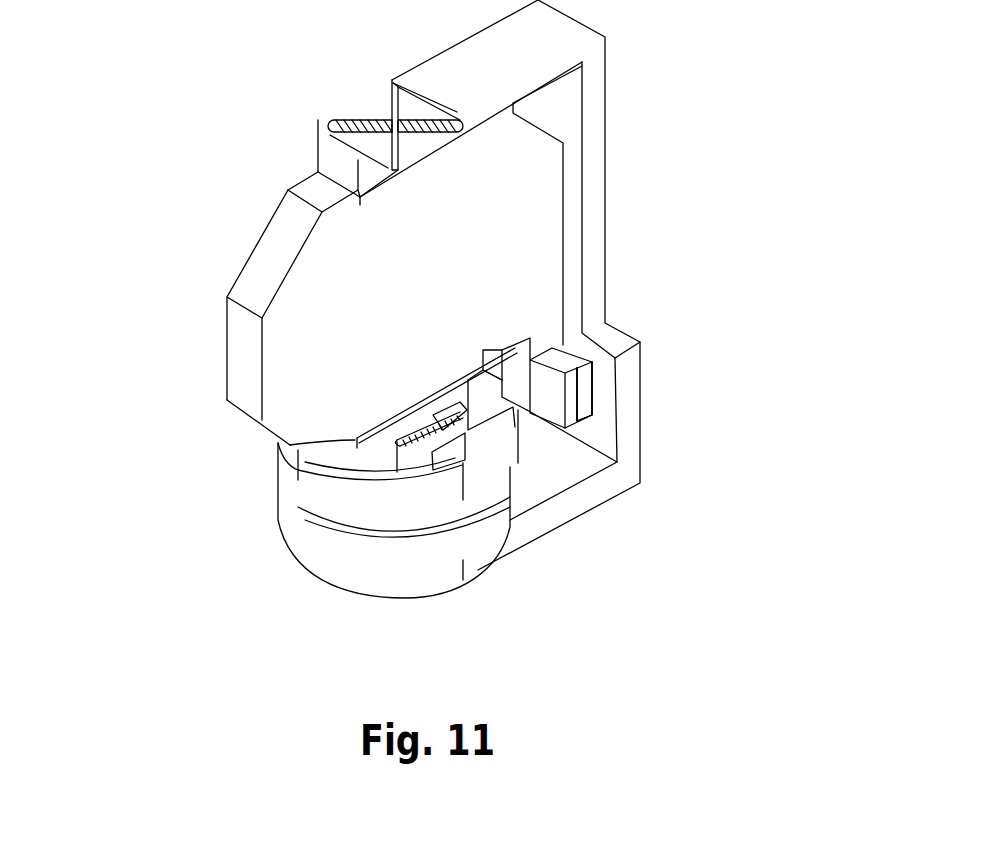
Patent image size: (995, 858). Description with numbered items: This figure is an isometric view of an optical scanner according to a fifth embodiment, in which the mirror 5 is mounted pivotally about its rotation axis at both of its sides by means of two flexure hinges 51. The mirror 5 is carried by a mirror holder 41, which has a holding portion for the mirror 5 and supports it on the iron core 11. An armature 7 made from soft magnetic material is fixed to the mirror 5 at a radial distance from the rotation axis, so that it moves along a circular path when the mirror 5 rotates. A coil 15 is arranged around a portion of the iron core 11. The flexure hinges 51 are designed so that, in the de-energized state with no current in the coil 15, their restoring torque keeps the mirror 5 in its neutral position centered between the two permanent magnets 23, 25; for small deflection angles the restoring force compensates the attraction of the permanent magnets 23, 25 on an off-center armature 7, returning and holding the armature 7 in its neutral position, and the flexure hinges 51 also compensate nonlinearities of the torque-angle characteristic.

The mirror 5 is at (530, 185).
The armature 7 is at (517, 358).
The iron core 11 is at (635, 433).
The coil 15 is at (320, 543).
The permanent magnet 23 is at (587, 383).
The permanent magnet 25 is at (584, 391).
The mirror holder 41 is at (337, 168).
The flexure hinge 51 is at (372, 127).